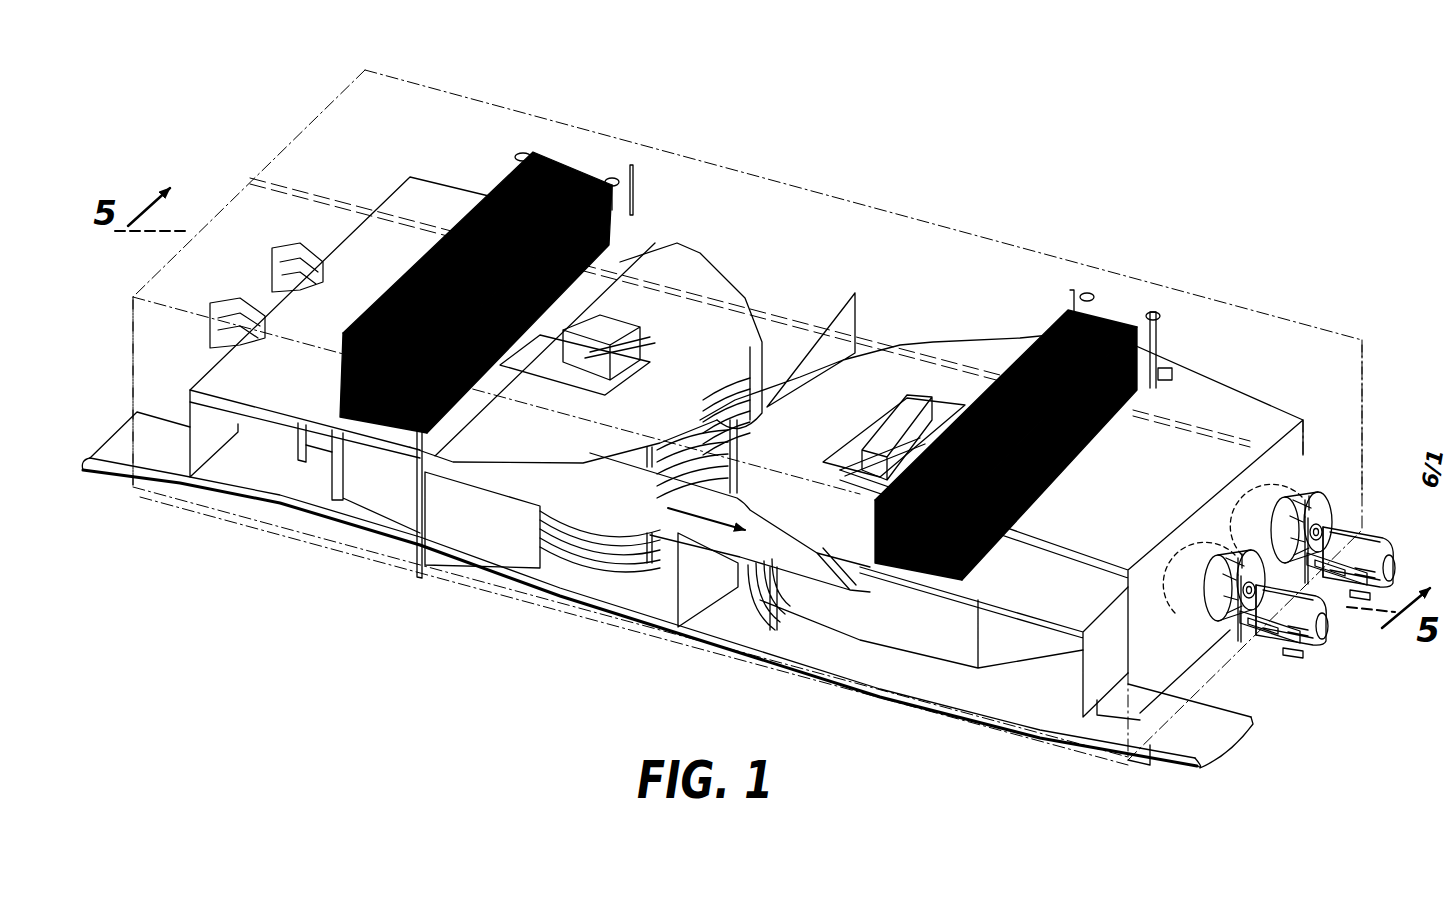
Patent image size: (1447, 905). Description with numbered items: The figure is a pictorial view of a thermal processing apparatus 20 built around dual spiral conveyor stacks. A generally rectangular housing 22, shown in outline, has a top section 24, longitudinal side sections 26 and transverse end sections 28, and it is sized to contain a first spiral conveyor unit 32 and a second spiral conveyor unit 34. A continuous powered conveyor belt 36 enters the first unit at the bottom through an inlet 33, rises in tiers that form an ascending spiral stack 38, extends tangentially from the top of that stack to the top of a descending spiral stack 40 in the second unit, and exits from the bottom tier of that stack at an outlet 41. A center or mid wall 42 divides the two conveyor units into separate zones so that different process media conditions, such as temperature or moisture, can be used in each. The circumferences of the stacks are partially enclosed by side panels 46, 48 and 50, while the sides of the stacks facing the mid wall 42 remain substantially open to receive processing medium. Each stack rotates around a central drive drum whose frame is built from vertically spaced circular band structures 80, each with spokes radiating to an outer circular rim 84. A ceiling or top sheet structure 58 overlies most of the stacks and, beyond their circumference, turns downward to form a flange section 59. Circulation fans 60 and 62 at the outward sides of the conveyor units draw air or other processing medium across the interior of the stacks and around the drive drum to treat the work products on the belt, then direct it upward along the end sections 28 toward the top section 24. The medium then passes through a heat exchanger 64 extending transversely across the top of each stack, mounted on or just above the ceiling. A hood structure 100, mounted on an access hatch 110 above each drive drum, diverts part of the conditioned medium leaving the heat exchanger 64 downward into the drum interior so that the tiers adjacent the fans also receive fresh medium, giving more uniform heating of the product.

The thermal processing apparatus 20 is at (881, 84).
The housing 22 is at (292, 103).
The top section 24 is at (416, 107).
The longitudinal side sections 26 is at (178, 330).
The transverse end sections 28 is at (1343, 398).
The first spiral conveyor unit 32 is at (698, 252).
The inlet 33 is at (202, 452).
The second spiral conveyor unit 34 is at (933, 393).
The conveyor belt 36 is at (176, 456).
The ascending spiral stack 38 is at (580, 560).
The descending spiral stack 40 is at (762, 605).
The outlet 41 is at (1098, 712).
The mid wall 42 is at (678, 592).
The side panel 46 is at (487, 530).
The side panel 48 is at (380, 497).
The side panel 50 is at (323, 460).
The ceiling structure 58 is at (362, 265).
The flange section 59 is at (245, 420).
The circulation fan 60 is at (1380, 542).
The circulation fan 62 is at (1292, 652).
The heat exchanger 64 is at (577, 158).
The circular band structure 80 is at (660, 445).
The outer circular rim 84 is at (605, 560).
The hood structure 100 is at (621, 312).
The access hatch 110 is at (657, 332).